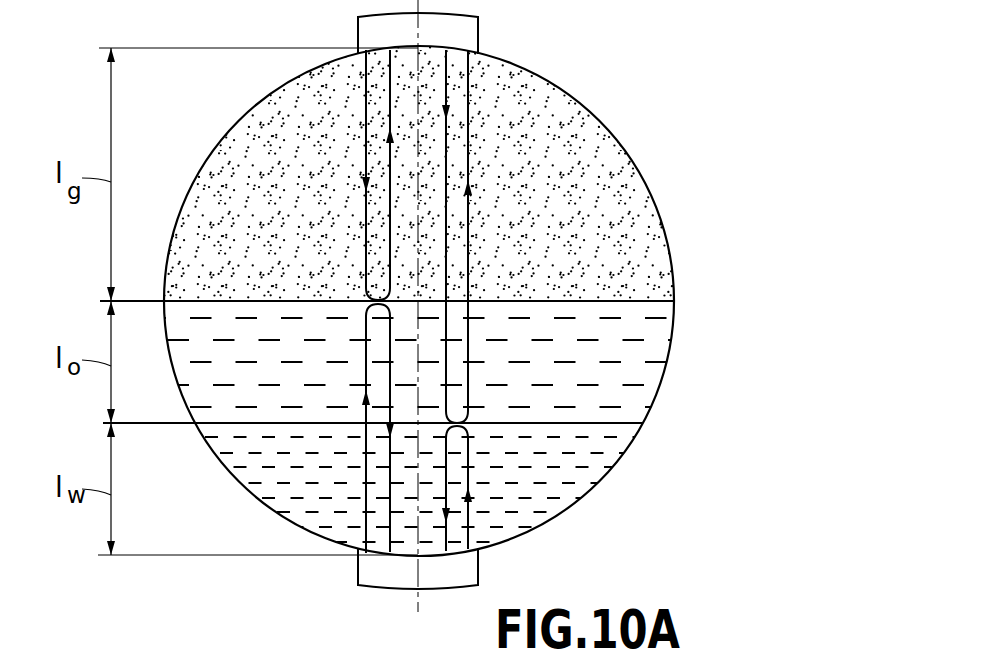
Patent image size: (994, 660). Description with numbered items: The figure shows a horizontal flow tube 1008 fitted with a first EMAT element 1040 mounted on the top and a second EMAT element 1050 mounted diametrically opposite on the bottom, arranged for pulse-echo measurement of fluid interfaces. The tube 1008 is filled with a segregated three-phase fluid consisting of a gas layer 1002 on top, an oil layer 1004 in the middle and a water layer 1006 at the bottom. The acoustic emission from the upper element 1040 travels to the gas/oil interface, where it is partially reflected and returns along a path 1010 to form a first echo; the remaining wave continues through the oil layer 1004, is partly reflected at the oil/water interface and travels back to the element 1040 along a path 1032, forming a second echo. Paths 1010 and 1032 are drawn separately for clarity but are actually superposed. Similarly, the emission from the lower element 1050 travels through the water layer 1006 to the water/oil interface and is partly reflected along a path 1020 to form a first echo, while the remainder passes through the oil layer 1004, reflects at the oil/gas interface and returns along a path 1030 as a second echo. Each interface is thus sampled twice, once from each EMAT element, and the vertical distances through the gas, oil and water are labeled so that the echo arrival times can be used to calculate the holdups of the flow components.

The gas layer 1002 is at (595, 163).
The oil layer 1004 is at (627, 353).
The water layer 1006 is at (582, 445).
The horizontal flow tube 1008 is at (280, 516).
The path 1010 is at (366, 152).
The path 1020 is at (468, 462).
The path 1030 is at (366, 473).
The path 1032 is at (470, 112).
The first EMAT element 1040 is at (478, 29).
The second EMAT element 1050 is at (478, 571).